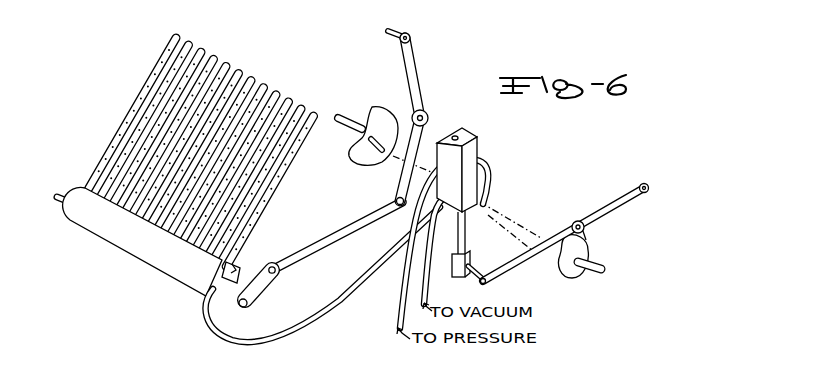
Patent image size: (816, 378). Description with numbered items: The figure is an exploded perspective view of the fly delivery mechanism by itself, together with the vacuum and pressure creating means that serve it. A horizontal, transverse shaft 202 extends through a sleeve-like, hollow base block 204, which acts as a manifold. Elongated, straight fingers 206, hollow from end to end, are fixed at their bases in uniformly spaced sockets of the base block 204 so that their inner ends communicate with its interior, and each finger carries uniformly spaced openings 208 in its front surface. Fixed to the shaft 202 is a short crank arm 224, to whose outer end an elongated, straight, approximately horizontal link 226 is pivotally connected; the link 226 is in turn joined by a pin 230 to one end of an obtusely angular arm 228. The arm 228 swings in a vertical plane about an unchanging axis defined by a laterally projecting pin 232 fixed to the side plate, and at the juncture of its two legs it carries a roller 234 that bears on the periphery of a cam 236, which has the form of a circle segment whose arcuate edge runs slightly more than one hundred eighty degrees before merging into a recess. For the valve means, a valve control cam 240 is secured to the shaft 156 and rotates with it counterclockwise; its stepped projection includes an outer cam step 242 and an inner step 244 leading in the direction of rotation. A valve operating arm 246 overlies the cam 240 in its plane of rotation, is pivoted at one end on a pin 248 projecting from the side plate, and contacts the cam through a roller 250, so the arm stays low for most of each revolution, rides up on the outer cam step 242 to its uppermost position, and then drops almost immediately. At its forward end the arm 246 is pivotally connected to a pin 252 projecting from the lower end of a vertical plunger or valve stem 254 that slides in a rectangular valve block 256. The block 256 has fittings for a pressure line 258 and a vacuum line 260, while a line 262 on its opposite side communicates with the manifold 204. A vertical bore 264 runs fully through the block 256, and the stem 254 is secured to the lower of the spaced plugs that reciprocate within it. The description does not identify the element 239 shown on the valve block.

The shaft 156 is at (341, 127).
The transverse shaft 202 is at (231, 281).
The base block 204 is at (163, 276).
The fingers 206 is at (257, 213).
The openings 208 is at (187, 173).
The crank arm 224 is at (256, 296).
The link 226 is at (328, 247).
The arm 228 is at (420, 134).
The pin 230 is at (396, 201).
The pin 232 is at (411, 40).
The roller 234 is at (423, 110).
The cam 236 is at (373, 108).
The aperture 239 is at (485, 125).
The valve control cam 240 is at (575, 275).
The outer cam step 242 is at (558, 220).
The inner step 244 is at (560, 262).
The valve operating arm 246 is at (606, 198).
The pin 248 is at (645, 183).
The roller 250 is at (585, 228).
The pin 252 is at (478, 270).
The valve stem 254 is at (463, 228).
The valve block 256 is at (478, 142).
The pressure line 258 is at (397, 300).
The vacuum line 260 is at (403, 288).
The line 262 is at (253, 346).
The vertical bore 264 is at (481, 161).